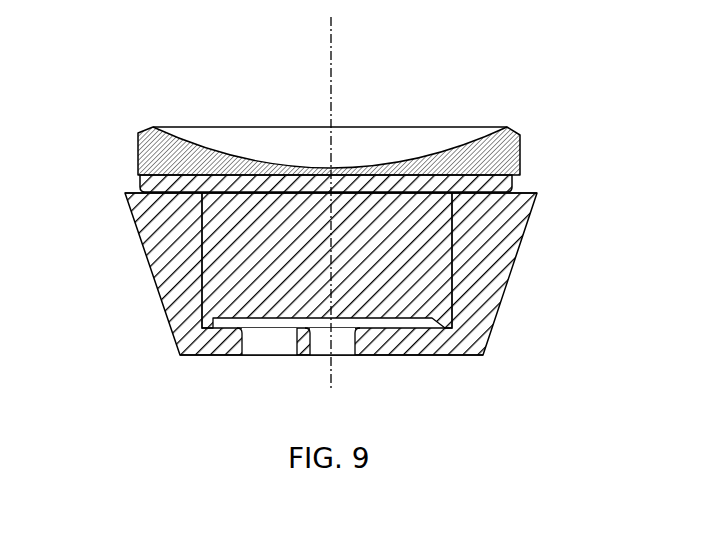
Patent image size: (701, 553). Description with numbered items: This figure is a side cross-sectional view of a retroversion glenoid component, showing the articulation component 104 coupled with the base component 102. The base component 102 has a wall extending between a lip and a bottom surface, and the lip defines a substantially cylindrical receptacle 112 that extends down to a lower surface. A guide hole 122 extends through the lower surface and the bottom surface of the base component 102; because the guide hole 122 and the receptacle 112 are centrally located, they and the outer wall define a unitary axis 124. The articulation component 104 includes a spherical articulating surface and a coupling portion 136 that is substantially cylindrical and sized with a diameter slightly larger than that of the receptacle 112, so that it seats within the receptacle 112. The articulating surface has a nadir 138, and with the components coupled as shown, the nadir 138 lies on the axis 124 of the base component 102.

The base component 102 is at (507, 290).
The articulation component 104 is at (138, 155).
The receptacle 112 is at (227, 320).
The guide hole 122 is at (343, 356).
The unitary axis 124 is at (331, 93).
The coupling portion 136 is at (448, 324).
The nadir 138 is at (333, 168).